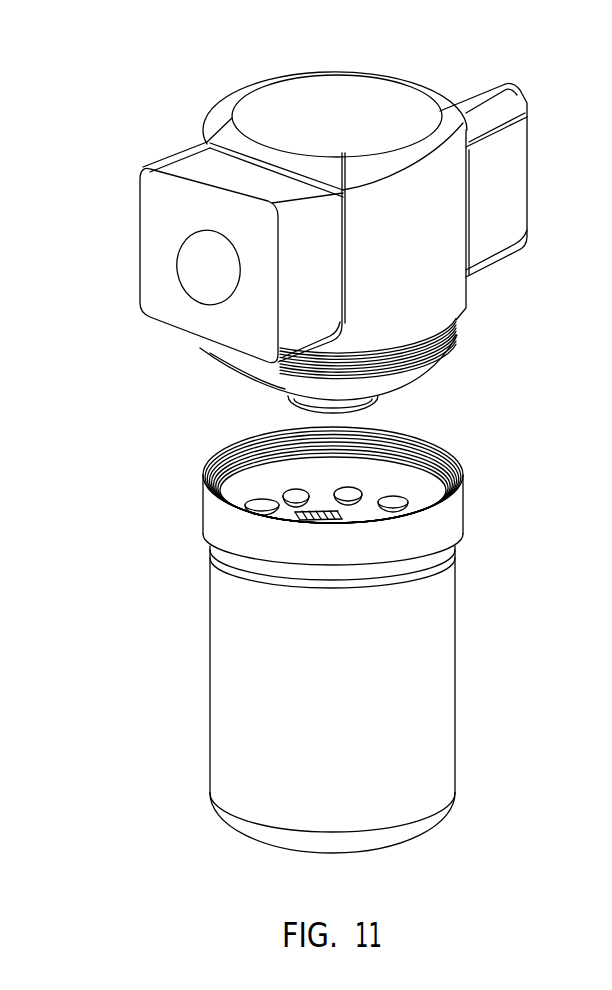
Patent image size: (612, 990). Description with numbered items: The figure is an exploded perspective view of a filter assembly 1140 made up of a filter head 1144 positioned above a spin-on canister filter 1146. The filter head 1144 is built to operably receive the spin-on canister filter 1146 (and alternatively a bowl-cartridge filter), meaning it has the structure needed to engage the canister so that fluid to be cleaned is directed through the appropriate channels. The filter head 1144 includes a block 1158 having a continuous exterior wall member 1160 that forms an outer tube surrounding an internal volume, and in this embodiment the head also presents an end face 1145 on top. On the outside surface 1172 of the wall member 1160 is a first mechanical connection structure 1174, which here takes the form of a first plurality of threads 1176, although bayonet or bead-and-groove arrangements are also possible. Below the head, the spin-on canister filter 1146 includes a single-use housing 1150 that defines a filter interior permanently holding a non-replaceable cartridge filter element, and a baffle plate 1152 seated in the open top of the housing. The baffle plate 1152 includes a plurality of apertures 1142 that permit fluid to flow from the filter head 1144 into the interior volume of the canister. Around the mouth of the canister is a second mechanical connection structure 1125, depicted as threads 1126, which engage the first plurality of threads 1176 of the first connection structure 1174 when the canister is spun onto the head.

The filter assembly 1140 is at (113, 147).
The filter head 1144 is at (183, 110).
The block 1158 is at (337, 72).
The end face 1145 is at (378, 107).
The continuous exterior wall member 1160 is at (467, 295).
The outside surface 1172 is at (464, 308).
The first mechanical connection structure 1174 is at (427, 363).
The first plurality of threads 1176 is at (393, 377).
The spin-on canister filter 1146 is at (177, 592).
The single-use housing 1150 is at (455, 685).
The second mechanical connection structure 1125 is at (443, 473).
The threads 1126 is at (425, 460).
The baffle plate 1152 is at (280, 500).
The apertures 1142 is at (300, 492).